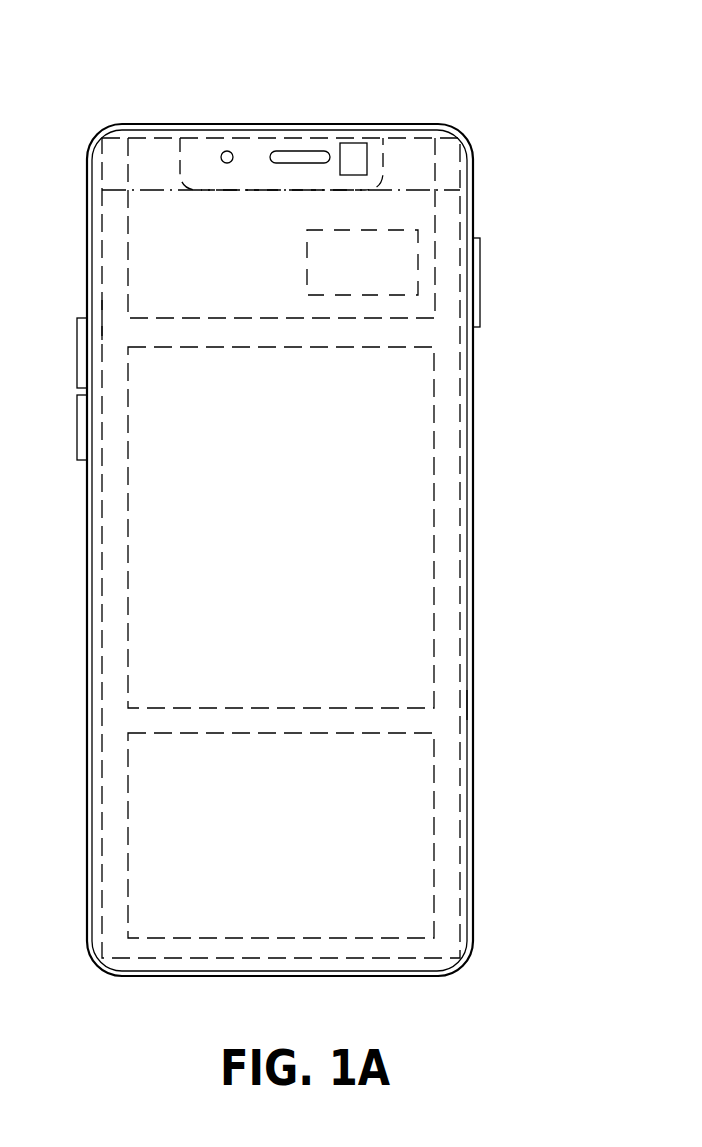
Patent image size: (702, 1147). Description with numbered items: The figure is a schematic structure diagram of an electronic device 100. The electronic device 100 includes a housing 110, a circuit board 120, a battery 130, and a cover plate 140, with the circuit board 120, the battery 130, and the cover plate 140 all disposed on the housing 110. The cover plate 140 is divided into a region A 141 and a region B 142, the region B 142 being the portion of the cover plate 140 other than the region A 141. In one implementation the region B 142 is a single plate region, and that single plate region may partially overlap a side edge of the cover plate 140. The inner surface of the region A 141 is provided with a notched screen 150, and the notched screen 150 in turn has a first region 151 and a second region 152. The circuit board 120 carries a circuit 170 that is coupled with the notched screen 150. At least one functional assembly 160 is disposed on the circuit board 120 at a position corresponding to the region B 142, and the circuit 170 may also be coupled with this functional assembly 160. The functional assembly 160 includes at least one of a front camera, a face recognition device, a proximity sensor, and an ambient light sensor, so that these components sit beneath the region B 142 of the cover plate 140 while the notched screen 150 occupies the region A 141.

The electronic device 100 is at (322, 86).
The housing 110 is at (477, 356).
The circuit board 120 is at (436, 175).
The battery 130 is at (436, 470).
The cover plate 140 is at (469, 648).
The region A 141 is at (443, 703).
The region B 142 is at (250, 146).
The notched screen 150 is at (461, 573).
The first region 151 is at (415, 170).
The second region 152 is at (130, 330).
The functional assembly 160 is at (355, 142).
The circuit 170 is at (418, 252).